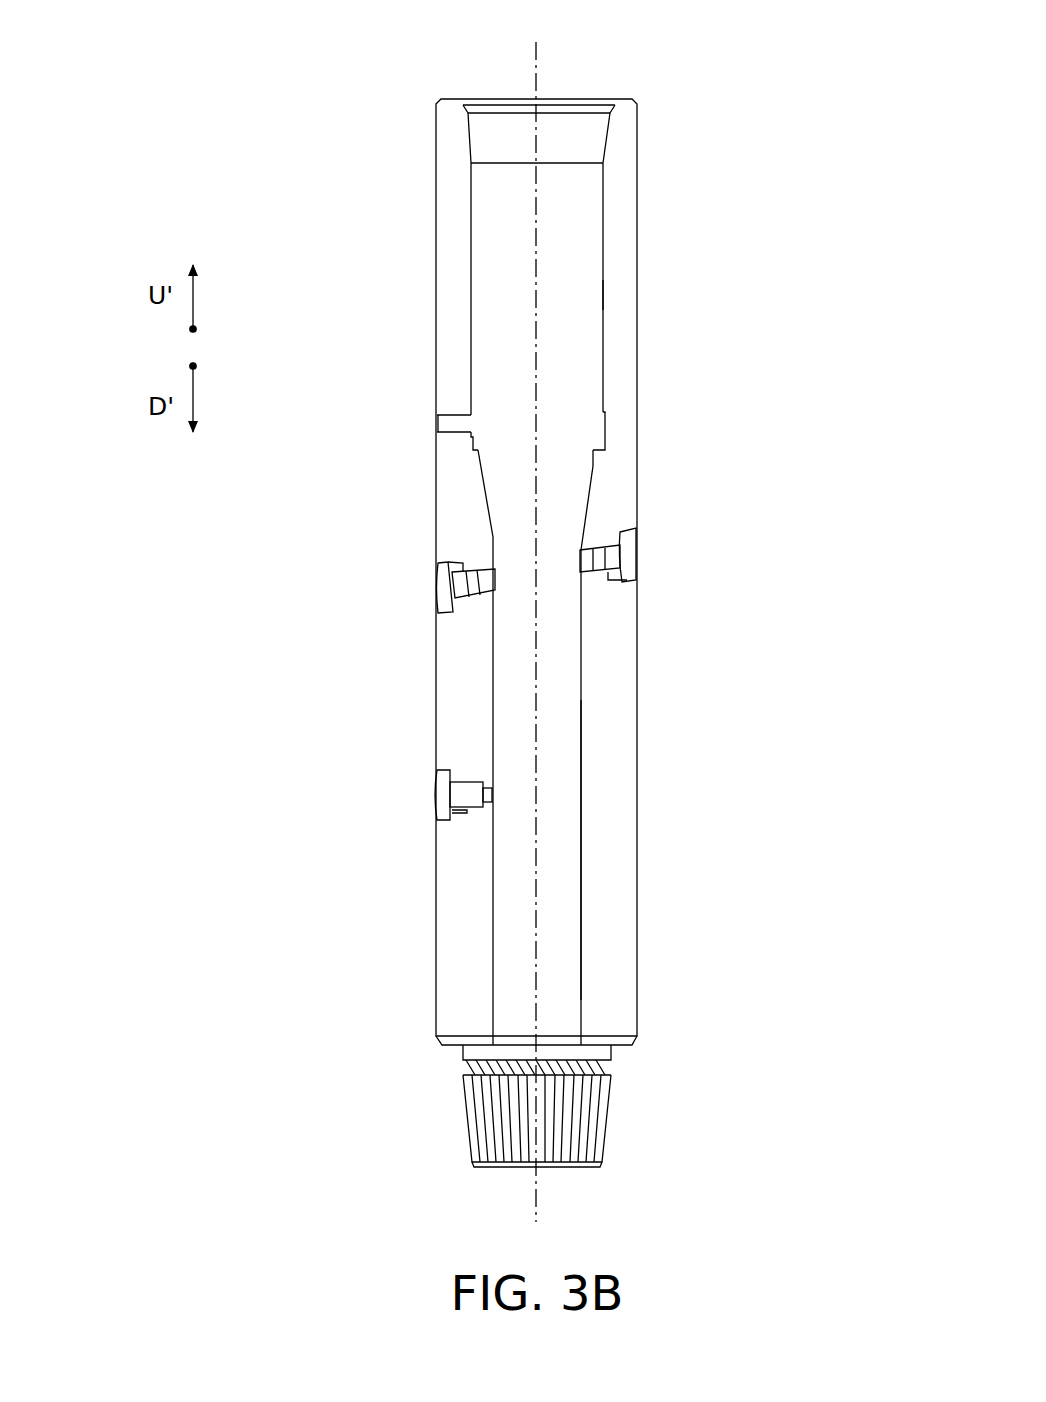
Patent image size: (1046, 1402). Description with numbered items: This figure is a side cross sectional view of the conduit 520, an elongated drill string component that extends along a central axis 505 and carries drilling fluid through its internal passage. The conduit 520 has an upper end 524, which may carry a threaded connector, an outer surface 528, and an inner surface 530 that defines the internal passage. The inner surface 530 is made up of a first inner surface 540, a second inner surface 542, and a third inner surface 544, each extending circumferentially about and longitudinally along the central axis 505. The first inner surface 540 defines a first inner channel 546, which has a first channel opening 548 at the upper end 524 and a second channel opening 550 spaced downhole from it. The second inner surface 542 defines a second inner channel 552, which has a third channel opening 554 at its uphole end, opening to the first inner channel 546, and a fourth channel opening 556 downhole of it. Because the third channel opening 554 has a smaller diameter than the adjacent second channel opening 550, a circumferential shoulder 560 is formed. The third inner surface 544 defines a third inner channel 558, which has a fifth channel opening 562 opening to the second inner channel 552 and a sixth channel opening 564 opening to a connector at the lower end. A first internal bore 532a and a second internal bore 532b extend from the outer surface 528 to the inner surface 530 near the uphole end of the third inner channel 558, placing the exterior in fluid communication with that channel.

The central axis 505 is at (535, 68).
The first channel opening 548 is at (487, 101).
The upper end 524 is at (428, 103).
The outer surface 528 is at (437, 203).
The conduit 520 is at (456, 302).
The inner surface 530 is at (477, 377).
The second channel opening 550 is at (506, 461).
The shoulder 560 is at (470, 463).
The fifth channel opening 562 is at (493, 538).
The first internal bore 532a is at (483, 594).
The sixth channel opening 564 is at (483, 1038).
The first inner channel 546 is at (573, 211).
The first inner surface 540 is at (603, 300).
The third channel opening 554 is at (565, 463).
The second inner surface 542 is at (593, 470).
The second inner channel 552 is at (550, 499).
The fourth channel opening 556 is at (568, 538).
The second internal bore 532b is at (584, 574).
The third inner channel 558 is at (559, 760).
The third inner surface 544 is at (580, 880).